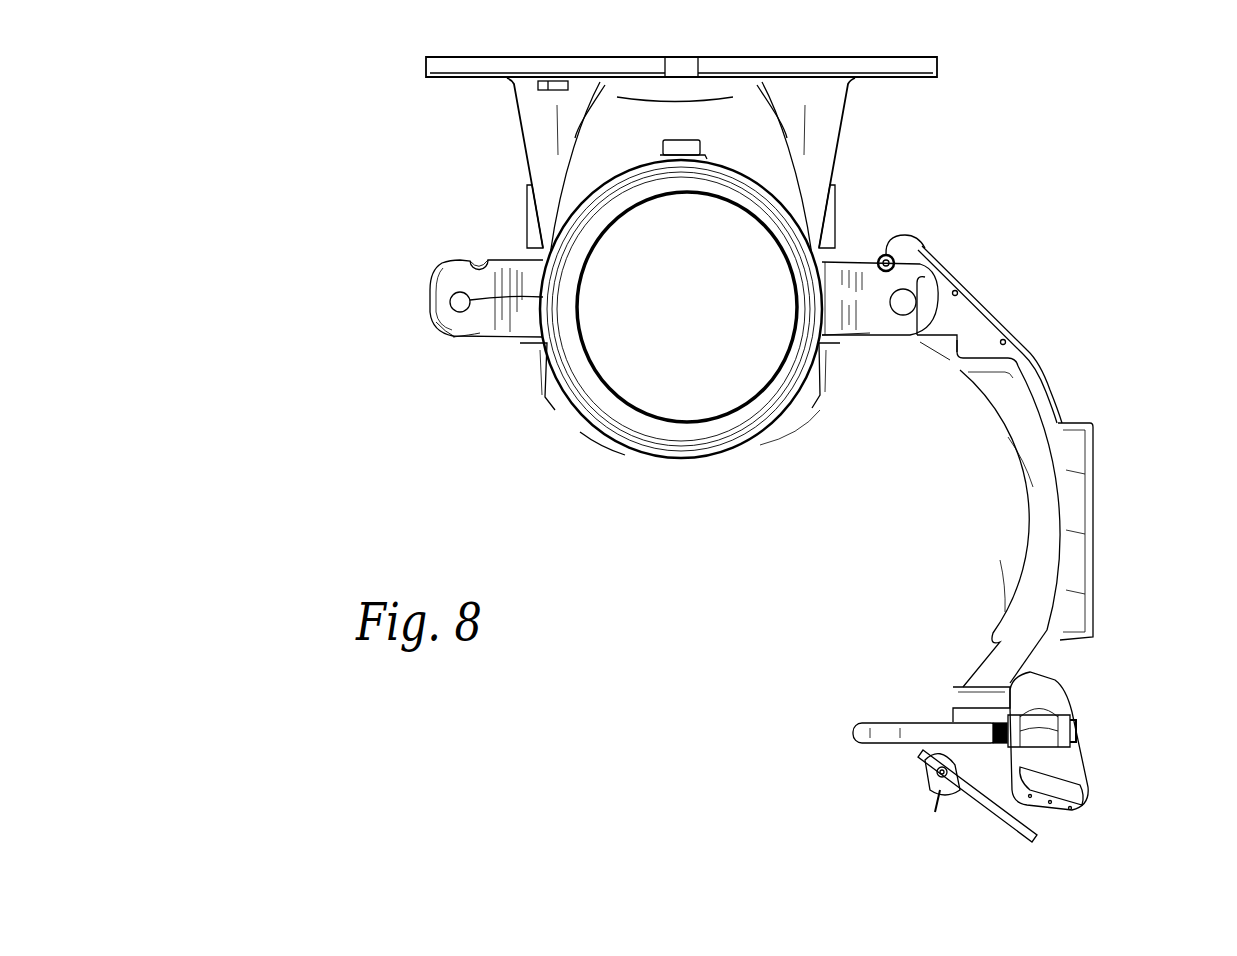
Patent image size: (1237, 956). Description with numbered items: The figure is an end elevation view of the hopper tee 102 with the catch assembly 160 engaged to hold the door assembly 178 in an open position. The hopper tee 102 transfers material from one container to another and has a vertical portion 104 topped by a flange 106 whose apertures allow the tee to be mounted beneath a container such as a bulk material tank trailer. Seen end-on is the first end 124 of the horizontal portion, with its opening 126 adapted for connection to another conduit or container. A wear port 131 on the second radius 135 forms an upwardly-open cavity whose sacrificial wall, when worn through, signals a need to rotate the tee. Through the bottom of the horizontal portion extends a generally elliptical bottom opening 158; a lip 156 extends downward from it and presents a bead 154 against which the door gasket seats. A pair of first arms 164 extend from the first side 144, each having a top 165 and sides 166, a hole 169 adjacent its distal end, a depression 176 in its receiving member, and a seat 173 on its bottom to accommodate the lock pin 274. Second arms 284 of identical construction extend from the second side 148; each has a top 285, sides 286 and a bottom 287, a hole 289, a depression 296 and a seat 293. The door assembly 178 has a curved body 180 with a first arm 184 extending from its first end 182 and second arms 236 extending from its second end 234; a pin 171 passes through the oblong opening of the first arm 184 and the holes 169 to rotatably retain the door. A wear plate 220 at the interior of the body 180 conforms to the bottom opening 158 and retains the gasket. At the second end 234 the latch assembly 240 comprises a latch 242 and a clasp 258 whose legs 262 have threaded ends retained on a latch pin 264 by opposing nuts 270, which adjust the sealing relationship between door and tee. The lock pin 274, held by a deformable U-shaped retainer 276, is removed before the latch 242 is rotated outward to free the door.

The hopper tee 102 is at (240, 138).
The vertical portion 104 is at (345, 201).
The flange 106 is at (445, 57).
The first end 124 is at (575, 407).
The opening 126 is at (638, 410).
The wear port 131 is at (683, 142).
The second radius 135 is at (735, 115).
The first side 144 is at (525, 215).
The second side 148 is at (825, 370).
The bead 154 is at (603, 445).
The lip 156 is at (548, 405).
The bottom opening 158 is at (770, 450).
The catch assembly 160 is at (980, 212).
The first arms 164 is at (820, 284).
The top 165 is at (845, 260).
The sides 166 is at (850, 322).
The hole 169 is at (908, 336).
The pin 171 is at (910, 292).
The seat 173 is at (975, 305).
The depression 176 is at (866, 298).
The door assembly 178 is at (1133, 385).
The body 180 is at (1060, 672).
The first end 182 is at (1083, 309).
The first arm 184 is at (960, 280).
The wear plate 220 is at (1028, 545).
The second end 234 is at (922, 638).
The second arms 236 is at (950, 700).
The latch assembly 240 is at (828, 810).
The latch 242 is at (1090, 803).
The clasp 258 is at (850, 723).
The legs 262 is at (933, 732).
The latch pin 264 is at (1065, 720).
The nuts 270 is at (1078, 745).
The lock pin 274 is at (925, 780).
The U-shaped retainer 276 is at (1020, 830).
The second arms 284 is at (440, 262).
The top 285 is at (510, 258).
The sides 286 is at (520, 315).
The bottom 287 is at (478, 340).
The hole 289 is at (543, 297).
The seat 293 is at (445, 328).
The depression 296 is at (452, 300).